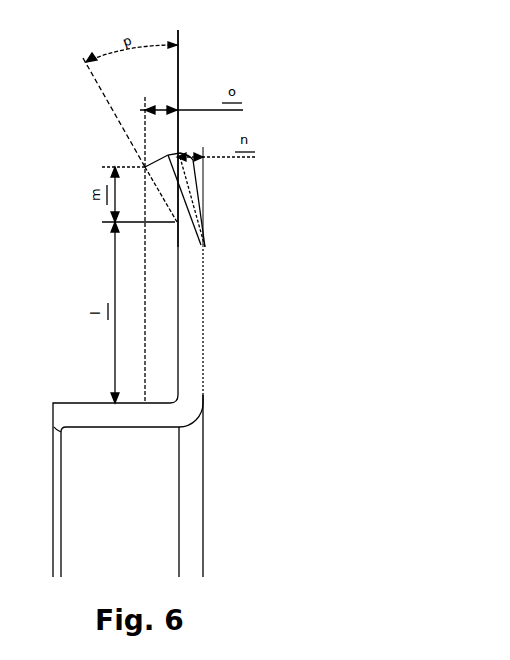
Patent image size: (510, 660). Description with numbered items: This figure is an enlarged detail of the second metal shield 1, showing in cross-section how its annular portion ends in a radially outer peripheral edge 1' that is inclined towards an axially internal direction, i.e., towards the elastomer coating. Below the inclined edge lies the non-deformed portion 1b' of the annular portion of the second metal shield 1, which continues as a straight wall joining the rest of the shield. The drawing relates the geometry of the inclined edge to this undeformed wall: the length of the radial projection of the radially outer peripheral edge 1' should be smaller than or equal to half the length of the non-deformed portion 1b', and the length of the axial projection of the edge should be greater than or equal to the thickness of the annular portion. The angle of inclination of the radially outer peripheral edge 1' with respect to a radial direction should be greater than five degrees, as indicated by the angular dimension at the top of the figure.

The second metal shield 1 is at (229, 303).
The radially outer peripheral edge 1' is at (220, 200).
The non-deformed portion of the annular portion 1b' is at (259, 310).